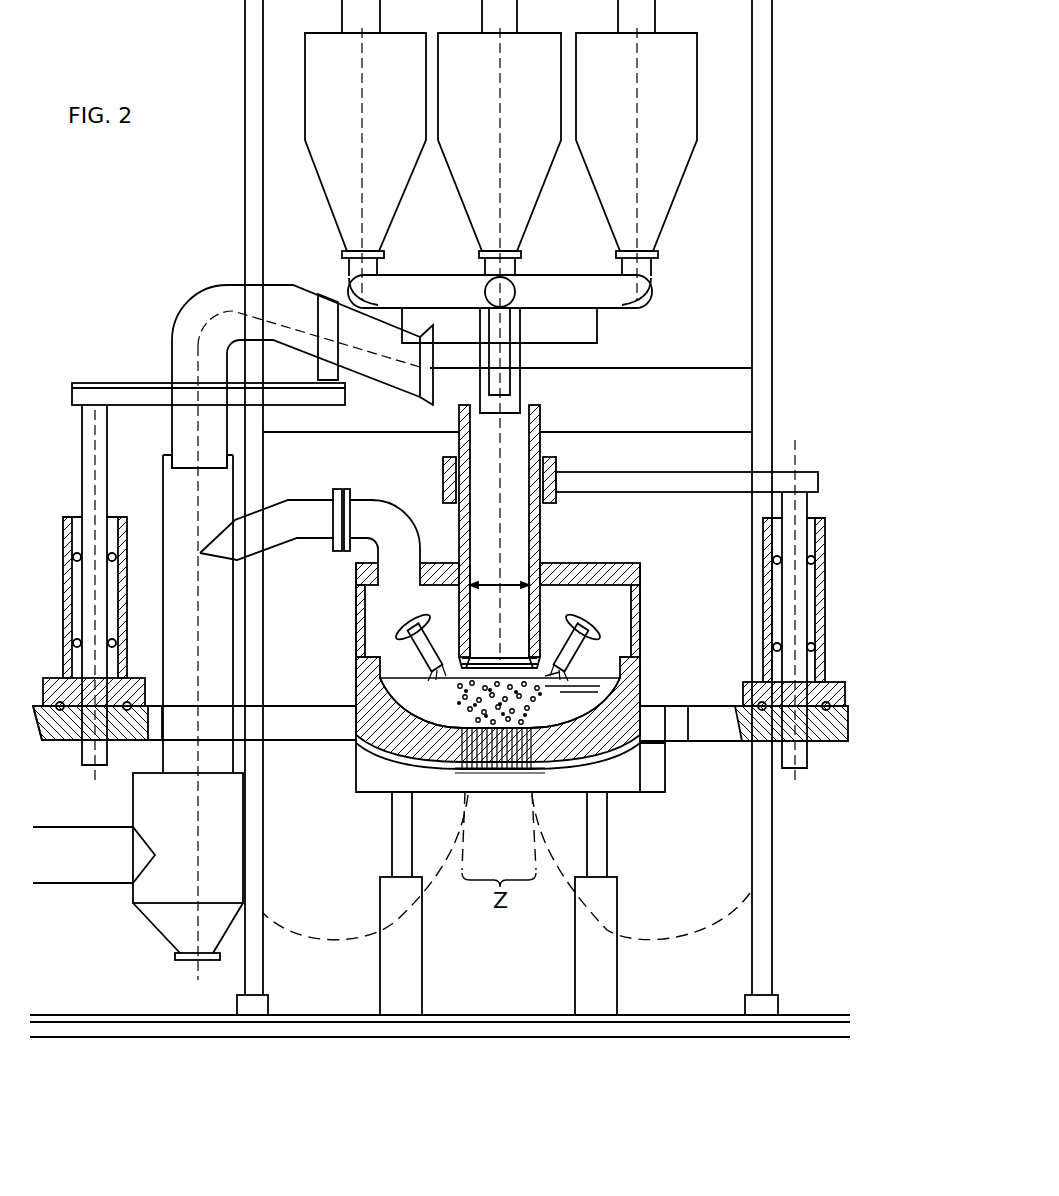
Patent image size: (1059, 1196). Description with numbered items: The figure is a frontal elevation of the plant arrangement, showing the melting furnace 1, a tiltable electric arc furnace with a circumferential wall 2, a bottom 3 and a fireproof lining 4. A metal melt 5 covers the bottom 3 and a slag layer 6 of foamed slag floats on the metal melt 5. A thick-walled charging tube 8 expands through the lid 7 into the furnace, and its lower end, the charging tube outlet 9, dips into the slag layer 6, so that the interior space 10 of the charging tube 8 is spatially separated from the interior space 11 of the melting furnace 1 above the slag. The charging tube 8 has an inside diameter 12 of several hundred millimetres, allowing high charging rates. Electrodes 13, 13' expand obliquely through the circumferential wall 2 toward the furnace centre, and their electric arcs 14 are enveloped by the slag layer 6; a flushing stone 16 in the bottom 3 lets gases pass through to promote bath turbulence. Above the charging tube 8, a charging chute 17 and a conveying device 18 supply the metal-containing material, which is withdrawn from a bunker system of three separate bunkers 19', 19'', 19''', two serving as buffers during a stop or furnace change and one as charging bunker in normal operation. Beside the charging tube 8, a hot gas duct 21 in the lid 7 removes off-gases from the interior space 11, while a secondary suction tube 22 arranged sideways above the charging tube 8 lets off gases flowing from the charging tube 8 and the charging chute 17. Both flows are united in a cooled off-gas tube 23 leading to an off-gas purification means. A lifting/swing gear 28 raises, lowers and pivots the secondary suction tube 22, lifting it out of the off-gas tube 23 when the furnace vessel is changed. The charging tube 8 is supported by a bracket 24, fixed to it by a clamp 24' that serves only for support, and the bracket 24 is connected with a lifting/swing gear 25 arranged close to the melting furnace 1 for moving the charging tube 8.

The melting furnace 1 is at (356, 626).
The circumferential wall 2 is at (358, 612).
The bottom 3 is at (613, 748).
The fireproof lining 4 is at (667, 707).
The metal melt 5 is at (436, 711).
The slag layer 6 is at (393, 673).
The lid 7 is at (640, 562).
The charging tube 8 is at (459, 440).
The charging tube outlet 9 is at (458, 652).
The interior space of the charging tube 10 is at (515, 540).
The interior space of the melting furnace 11 is at (618, 623).
The inside diameter 12 is at (492, 583).
The electrode 13 is at (409, 636).
The electrode 13' is at (634, 653).
The electric arc 14 is at (552, 660).
The flushing stone 16 is at (453, 763).
The charging chute 17 is at (520, 397).
The conveying device 18 is at (500, 292).
The bunker 19' is at (365, 152).
The bunker 19'' is at (499, 330).
The bunker 19''' is at (636, 152).
The hot gas duct 21 is at (290, 517).
The secondary suction tube 22 is at (188, 325).
The off-gas tube 23 is at (215, 700).
The bracket 24 is at (440, 518).
The clamp 24' is at (630, 472).
The lifting/swing gear 25 is at (775, 585).
The lifting/swing gear 28 is at (112, 540).